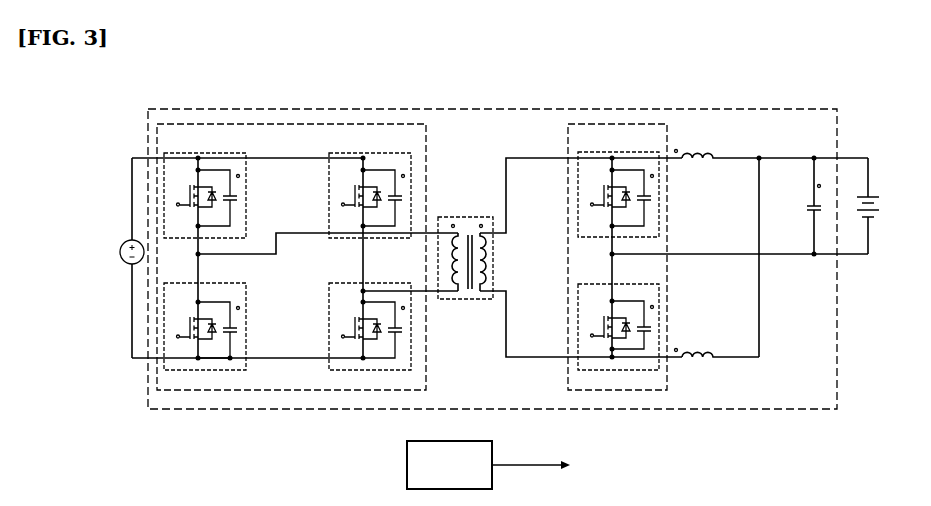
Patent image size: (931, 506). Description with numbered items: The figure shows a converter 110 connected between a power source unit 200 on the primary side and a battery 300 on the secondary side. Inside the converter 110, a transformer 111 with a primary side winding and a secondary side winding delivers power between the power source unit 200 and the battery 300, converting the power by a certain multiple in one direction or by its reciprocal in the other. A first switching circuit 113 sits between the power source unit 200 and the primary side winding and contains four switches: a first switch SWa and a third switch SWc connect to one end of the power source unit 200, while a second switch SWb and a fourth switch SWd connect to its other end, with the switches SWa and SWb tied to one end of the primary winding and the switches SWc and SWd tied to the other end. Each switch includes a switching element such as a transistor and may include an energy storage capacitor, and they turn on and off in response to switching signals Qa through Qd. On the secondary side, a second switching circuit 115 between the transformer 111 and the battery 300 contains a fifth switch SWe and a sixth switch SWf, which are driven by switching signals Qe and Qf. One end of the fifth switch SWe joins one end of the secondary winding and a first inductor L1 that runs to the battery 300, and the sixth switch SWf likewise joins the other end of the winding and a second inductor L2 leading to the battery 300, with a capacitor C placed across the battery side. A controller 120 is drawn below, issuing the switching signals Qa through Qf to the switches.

The converter 110 is at (485, 109).
The transformer 111 is at (473, 217).
The first switching circuit 113 is at (427, 375).
The second switching circuit 115 is at (668, 375).
The controller 120 is at (470, 441).
The power source unit 200 is at (125, 240).
The battery 300 is at (883, 207).
The first switch SWa is at (247, 180).
The second switch SWb is at (247, 313).
The third switch SWc is at (329, 210).
The fourth switch SWd is at (329, 342).
The fifth switch SWe is at (660, 223).
The sixth switch SWf is at (660, 287).
The first inductor L1 is at (695, 150).
The second inductor L2 is at (695, 349).
The capacitor C is at (806, 208).